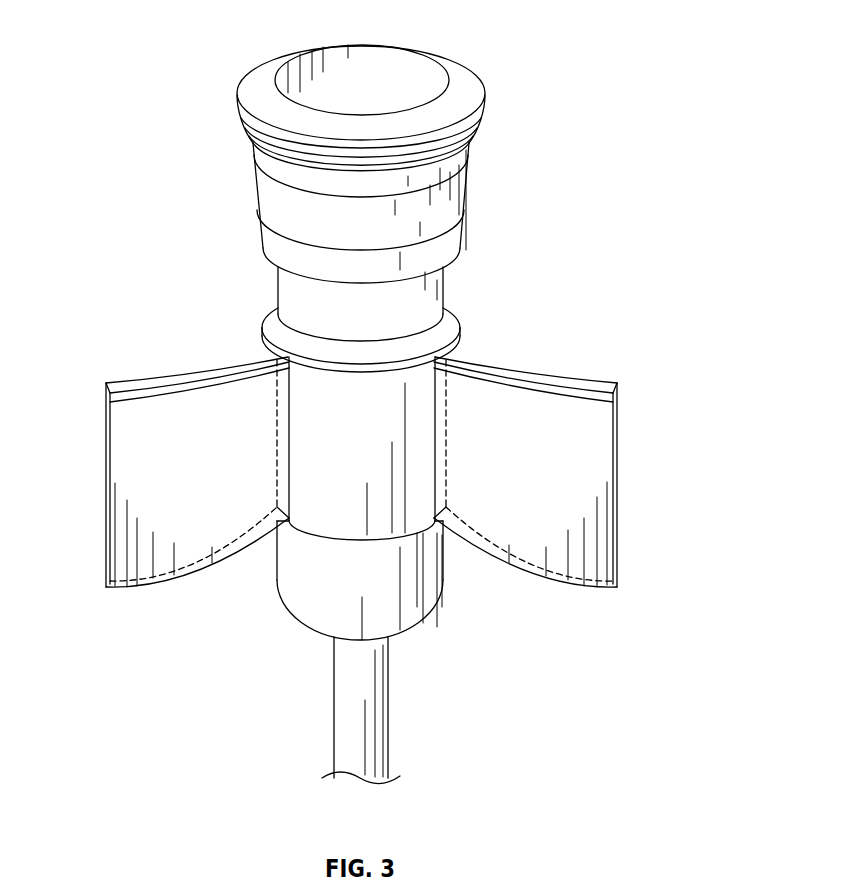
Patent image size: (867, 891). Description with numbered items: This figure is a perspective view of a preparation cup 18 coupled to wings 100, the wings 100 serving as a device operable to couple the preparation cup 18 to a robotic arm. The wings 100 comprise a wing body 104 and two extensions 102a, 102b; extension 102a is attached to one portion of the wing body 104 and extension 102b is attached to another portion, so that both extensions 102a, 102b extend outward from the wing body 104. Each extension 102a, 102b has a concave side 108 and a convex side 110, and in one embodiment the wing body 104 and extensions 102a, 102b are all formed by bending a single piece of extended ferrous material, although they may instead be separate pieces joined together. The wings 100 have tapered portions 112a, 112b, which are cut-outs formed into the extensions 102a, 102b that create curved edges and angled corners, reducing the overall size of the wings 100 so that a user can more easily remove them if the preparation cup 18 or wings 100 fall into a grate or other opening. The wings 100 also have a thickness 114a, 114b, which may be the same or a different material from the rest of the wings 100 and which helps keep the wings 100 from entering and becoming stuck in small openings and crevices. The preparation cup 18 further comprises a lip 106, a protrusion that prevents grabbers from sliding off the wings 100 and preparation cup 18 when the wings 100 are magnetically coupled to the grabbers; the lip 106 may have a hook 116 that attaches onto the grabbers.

The preparation cup 18 is at (462, 84).
The wings 100 is at (370, 473).
The extension 102a is at (159, 500).
The extension 102b is at (572, 483).
The wing body 104 is at (352, 530).
The lip 106 is at (360, 374).
The concave side 108 is at (533, 372).
The convex side 110 is at (600, 543).
The tapered portion 112a is at (237, 553).
The tapered portion 112b is at (605, 590).
The thickness 114a is at (173, 582).
The thickness 114b is at (523, 578).
The hook 116 is at (308, 350).